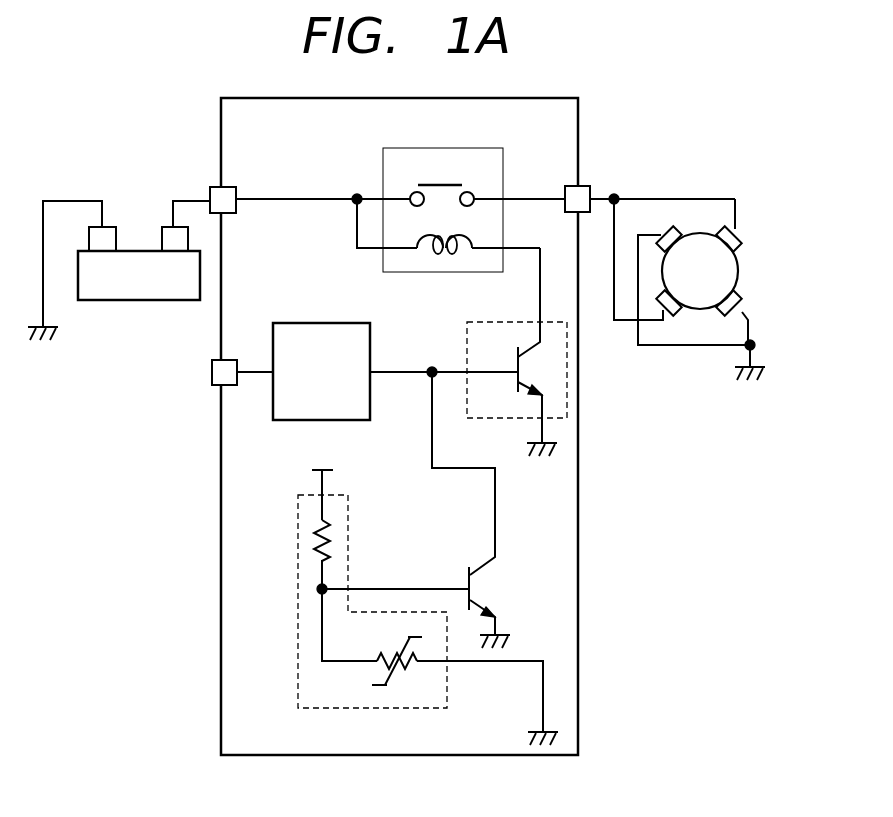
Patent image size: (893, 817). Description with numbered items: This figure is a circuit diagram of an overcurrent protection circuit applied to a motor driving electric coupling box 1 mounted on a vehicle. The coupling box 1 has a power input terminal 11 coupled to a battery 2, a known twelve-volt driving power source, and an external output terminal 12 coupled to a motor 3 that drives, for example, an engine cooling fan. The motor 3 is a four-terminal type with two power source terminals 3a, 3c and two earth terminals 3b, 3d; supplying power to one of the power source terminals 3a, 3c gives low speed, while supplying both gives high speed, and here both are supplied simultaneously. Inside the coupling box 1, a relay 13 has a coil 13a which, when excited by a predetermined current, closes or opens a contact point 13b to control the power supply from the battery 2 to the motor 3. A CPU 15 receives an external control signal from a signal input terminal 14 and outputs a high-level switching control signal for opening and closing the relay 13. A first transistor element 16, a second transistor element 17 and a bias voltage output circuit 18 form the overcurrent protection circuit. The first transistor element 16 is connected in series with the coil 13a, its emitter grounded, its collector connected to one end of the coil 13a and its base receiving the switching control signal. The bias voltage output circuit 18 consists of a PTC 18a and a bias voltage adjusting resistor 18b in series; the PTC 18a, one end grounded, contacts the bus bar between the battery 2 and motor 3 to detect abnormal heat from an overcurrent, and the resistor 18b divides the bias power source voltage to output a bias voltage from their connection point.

The motor driving electric coupling box 1 is at (586, 112).
The battery 2 is at (137, 302).
The motor 3 is at (700, 270).
The power source terminal 3a is at (742, 243).
The earth terminal 3b is at (676, 236).
The power source terminal 3c is at (673, 311).
The earth terminal 3d is at (727, 311).
The power input terminal 11 is at (220, 187).
The external output terminal 12 is at (587, 187).
The relay 13 is at (448, 210).
The coil 13a is at (437, 256).
The contact point 13b is at (437, 183).
The signal input terminal 14 is at (214, 390).
The CPU 15 is at (300, 323).
The first transistor element 16 is at (466, 347).
The second transistor element 17 is at (499, 579).
The bias voltage output circuit 18 is at (428, 593).
The PTC 18a is at (410, 670).
The bias voltage adjusting resistor 18b is at (340, 545).